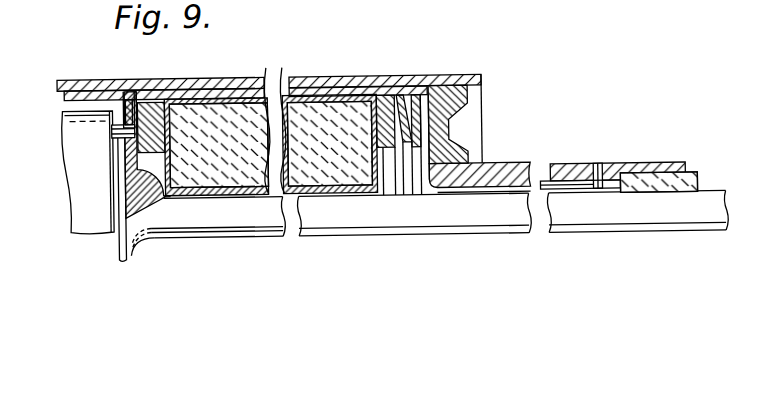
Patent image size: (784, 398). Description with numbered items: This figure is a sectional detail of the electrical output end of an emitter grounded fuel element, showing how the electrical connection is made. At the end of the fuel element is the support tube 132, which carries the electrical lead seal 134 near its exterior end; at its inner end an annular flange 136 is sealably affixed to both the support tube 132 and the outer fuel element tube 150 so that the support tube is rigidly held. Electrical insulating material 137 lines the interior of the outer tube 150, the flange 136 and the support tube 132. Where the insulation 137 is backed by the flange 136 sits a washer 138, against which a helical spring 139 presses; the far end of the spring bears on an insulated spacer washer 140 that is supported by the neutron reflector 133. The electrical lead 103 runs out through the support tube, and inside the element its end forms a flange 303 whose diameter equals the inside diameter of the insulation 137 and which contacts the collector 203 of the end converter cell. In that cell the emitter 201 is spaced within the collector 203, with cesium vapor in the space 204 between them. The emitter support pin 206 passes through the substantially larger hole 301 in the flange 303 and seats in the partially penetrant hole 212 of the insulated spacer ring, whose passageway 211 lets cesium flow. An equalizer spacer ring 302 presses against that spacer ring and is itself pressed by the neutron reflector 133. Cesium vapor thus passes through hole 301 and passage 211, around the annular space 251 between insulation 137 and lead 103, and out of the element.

The electrical lead 103 is at (707, 194).
The support tube 132 is at (487, 166).
The neutron reflector 133 is at (273, 78).
The electrical lead seal 134 is at (688, 176).
The annular flange 136 is at (467, 98).
The electrical insulating material 137 is at (313, 79).
The washer 138 is at (422, 93).
The helical spring 139 is at (400, 92).
The insulated spacer washer 140 is at (388, 92).
The outer fuel element tube 150 is at (202, 76).
The emitter 201 is at (65, 195).
The collector 203 is at (65, 101).
The space 204 is at (120, 216).
The emitter support pin 206 is at (112, 129).
The passageway 211 is at (128, 161).
The partially penetrant hole 212 is at (138, 96).
The annular space 251 is at (292, 196).
The hole 301 is at (128, 93).
The equalizer spacer ring 302 is at (163, 124).
The flange 303 is at (135, 246).